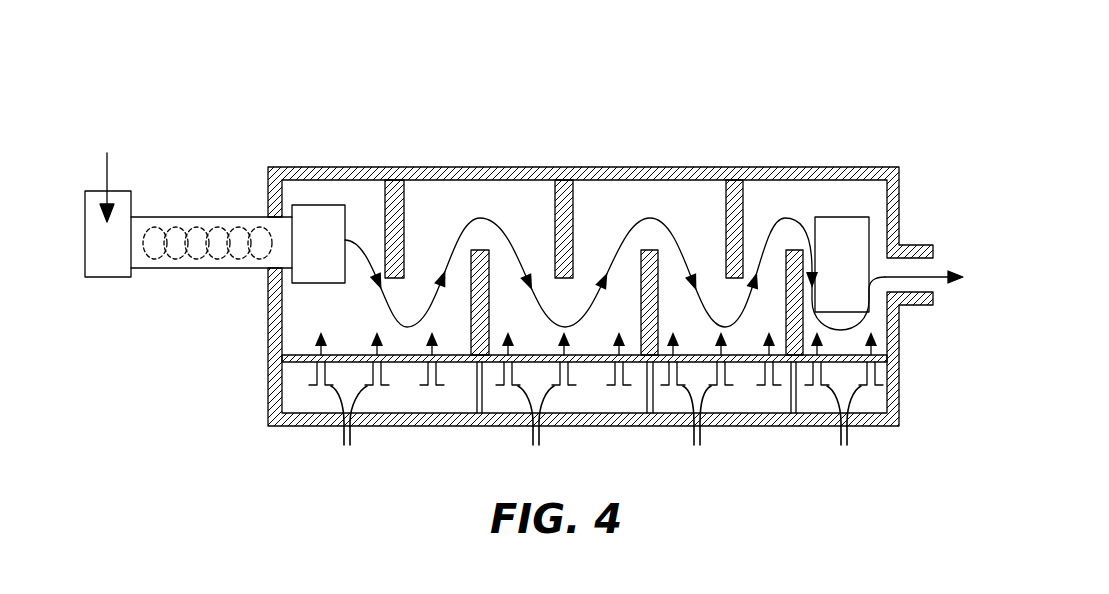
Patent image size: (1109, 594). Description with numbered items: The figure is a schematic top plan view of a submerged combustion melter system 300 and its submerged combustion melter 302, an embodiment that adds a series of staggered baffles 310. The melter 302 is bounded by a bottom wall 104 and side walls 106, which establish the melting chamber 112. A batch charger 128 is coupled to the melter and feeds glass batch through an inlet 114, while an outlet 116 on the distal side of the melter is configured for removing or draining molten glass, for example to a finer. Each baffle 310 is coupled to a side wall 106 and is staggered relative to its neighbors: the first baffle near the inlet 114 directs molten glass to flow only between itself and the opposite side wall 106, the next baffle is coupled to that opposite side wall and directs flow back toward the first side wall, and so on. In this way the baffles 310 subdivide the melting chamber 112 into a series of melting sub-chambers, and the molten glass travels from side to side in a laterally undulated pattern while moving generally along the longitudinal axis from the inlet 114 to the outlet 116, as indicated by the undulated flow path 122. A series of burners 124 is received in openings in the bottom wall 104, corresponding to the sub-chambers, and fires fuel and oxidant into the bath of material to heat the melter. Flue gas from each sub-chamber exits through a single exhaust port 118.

The submerged combustion melter 302 is at (566, 103).
The bottom wall 104 is at (442, 197).
The side wall 106 is at (662, 175).
The melting chamber 112 is at (701, 198).
The batch charger 128 is at (123, 195).
The inlet 114 is at (308, 212).
The baffle 310 is at (397, 195).
The undulated flow path 122 is at (518, 245).
The exhaust port 118 is at (862, 217).
The outlet 116 is at (917, 245).
The submerged combustion melter system 300 is at (234, 412).
The burner 124 is at (423, 387).